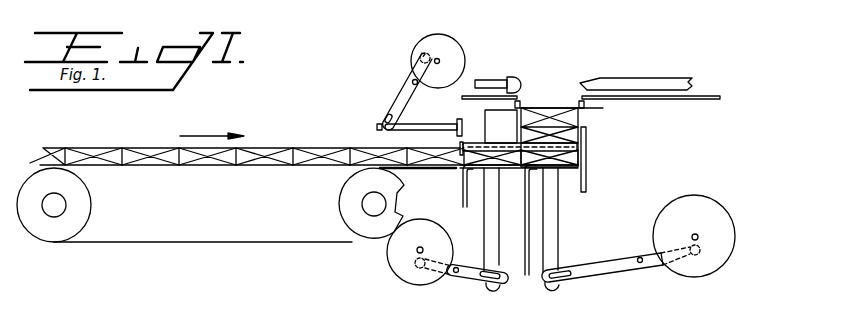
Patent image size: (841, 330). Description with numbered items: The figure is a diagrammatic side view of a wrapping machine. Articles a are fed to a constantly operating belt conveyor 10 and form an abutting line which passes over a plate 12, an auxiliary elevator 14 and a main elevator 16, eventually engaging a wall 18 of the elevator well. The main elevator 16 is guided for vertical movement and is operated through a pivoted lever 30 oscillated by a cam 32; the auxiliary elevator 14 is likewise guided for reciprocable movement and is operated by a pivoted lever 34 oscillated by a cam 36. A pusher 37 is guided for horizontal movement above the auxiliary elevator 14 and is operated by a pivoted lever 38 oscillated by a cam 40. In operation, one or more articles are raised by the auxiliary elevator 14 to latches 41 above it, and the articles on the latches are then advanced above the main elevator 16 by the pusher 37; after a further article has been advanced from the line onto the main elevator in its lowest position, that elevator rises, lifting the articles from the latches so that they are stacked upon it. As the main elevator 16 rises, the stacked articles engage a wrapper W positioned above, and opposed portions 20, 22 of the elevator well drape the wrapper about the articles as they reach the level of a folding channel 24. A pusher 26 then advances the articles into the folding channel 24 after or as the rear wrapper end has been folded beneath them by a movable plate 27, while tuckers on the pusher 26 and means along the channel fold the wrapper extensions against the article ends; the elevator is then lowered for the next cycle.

The belt conveyor 10 is at (197, 243).
The plate 12 is at (425, 173).
The auxiliary elevator 14 is at (508, 172).
The main elevator 16 is at (570, 170).
The wall 18 is at (586, 155).
The opposed portion of the elevator well 20 is at (520, 98).
The opposed portion of the elevator well 22 is at (580, 107).
The folding channel 24 is at (662, 77).
The pusher 26 is at (495, 80).
The movable plate 27 is at (478, 100).
The pivoted lever 30 is at (618, 272).
The cam 32 is at (695, 278).
The pivoted lever 34 is at (466, 282).
The cam 36 is at (398, 282).
The pusher 37 is at (458, 122).
The pivoted lever 38 is at (398, 105).
The cam 40 is at (415, 46).
The latches 41 is at (455, 141).
The articles a is at (153, 147).
The wrapper W is at (604, 108).